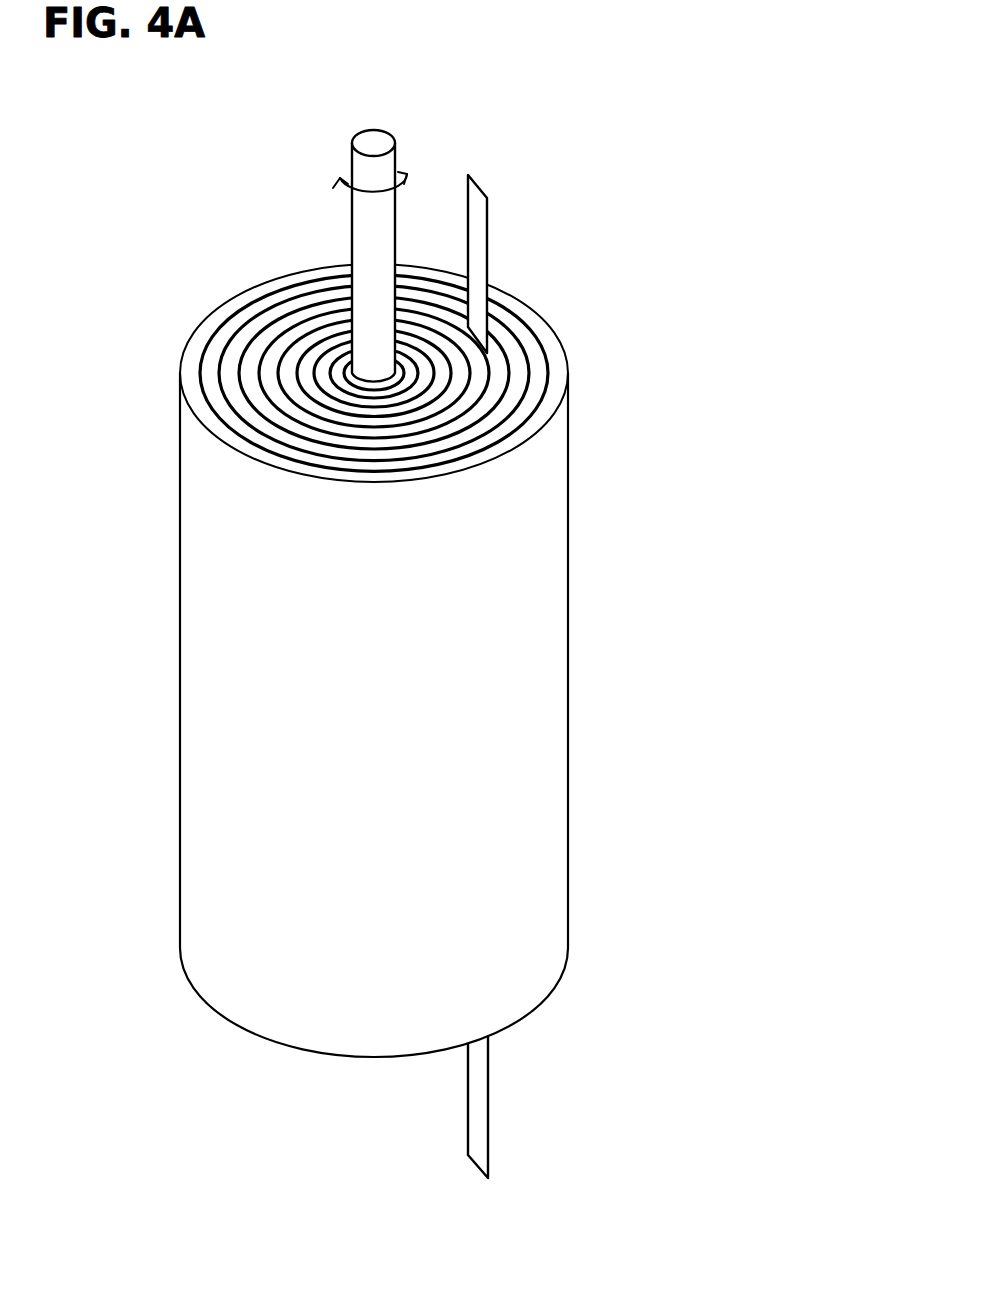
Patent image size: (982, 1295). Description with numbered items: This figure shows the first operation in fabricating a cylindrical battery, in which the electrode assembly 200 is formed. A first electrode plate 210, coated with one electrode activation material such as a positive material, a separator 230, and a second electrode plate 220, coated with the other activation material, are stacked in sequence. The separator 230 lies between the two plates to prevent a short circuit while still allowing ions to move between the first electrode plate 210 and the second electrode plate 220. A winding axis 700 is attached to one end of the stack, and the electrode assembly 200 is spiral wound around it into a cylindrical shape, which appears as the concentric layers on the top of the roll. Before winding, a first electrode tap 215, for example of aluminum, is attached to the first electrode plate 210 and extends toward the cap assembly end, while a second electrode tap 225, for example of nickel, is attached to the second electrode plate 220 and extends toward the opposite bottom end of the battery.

The electrode assembly 200 is at (648, 655).
The first electrode plate 210 is at (516, 348).
The first electrode tap 215 is at (475, 218).
The second electrode plate 220 is at (537, 366).
The second electrode tap 225 is at (475, 1095).
The separator 230 is at (547, 406).
The winding axis 700 is at (375, 140).